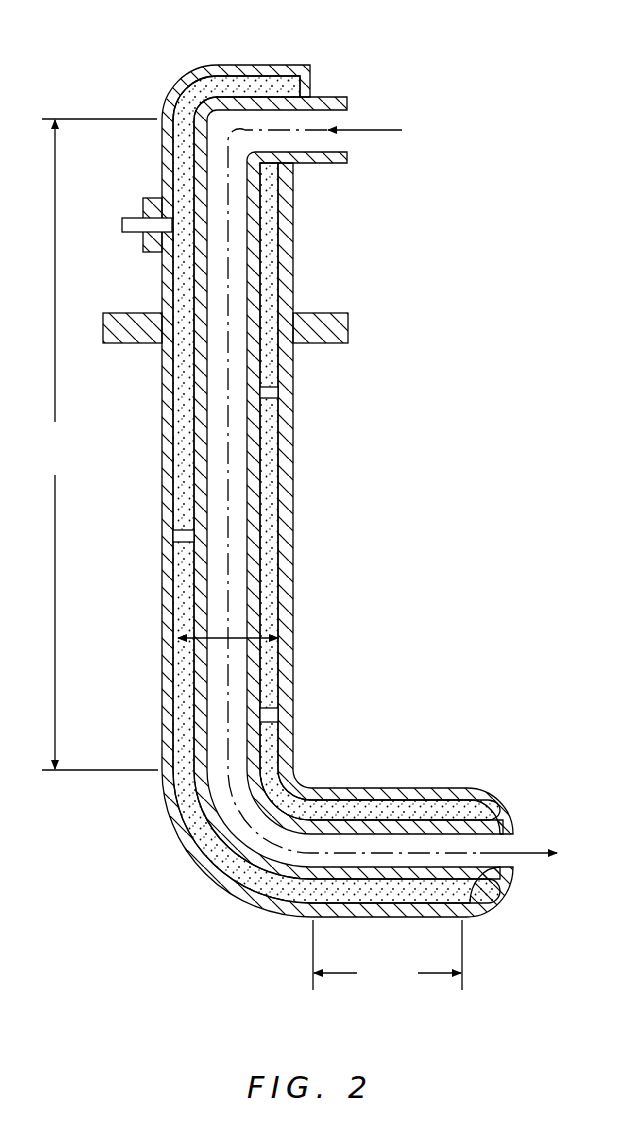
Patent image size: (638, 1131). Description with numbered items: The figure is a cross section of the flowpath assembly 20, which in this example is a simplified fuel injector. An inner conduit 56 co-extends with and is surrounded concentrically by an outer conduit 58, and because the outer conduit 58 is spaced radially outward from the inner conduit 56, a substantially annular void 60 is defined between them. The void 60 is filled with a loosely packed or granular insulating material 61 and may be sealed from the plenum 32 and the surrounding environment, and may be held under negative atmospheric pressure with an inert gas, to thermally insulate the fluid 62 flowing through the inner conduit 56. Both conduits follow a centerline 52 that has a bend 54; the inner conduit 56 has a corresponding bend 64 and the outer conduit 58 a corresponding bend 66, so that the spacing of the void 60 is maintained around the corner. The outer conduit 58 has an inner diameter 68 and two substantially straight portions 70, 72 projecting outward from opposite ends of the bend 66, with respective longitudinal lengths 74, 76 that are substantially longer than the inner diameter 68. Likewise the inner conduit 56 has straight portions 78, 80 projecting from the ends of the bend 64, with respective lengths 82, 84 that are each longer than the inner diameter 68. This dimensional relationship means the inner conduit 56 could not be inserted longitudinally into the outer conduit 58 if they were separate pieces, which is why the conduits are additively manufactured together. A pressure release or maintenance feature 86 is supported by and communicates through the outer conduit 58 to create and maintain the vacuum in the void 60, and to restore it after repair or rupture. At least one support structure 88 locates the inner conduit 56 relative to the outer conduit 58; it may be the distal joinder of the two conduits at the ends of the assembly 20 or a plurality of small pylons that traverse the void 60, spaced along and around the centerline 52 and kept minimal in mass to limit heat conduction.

The flowpath assembly 20 is at (498, 145).
The plenum 32 is at (128, 606).
The centerline 52 is at (227, 232).
The bend of the centerline 54 is at (258, 812).
The inner conduit 56 is at (265, 513).
The outer conduit 58 is at (296, 577).
The annular void 60 is at (185, 487).
The insulating material 61 is at (247, 88).
The fluid 62 is at (393, 128).
The bend of the inner conduit 64 is at (197, 843).
The bend of the outer conduit 66 is at (203, 870).
The inner diameter 68 is at (247, 638).
The first straight portion of the outer conduit 70 is at (165, 425).
The second straight portion of the outer conduit 72 is at (428, 918).
The longitudinal length of the first outer straight portion 74 is at (93, 444).
The longitudinal length of the second outer straight portion 76 is at (387, 955).
The first straight portion of the inner conduit 78 is at (178, 370).
The second straight portion of the inner conduit 80 is at (397, 815).
The longitudinal length of the first inner straight portion 82 is at (93, 444).
The longitudinal length of the second inner straight portion 84 is at (387, 955).
The pressure release or maintenance feature 86 is at (143, 208).
The support structure 88 is at (312, 88).